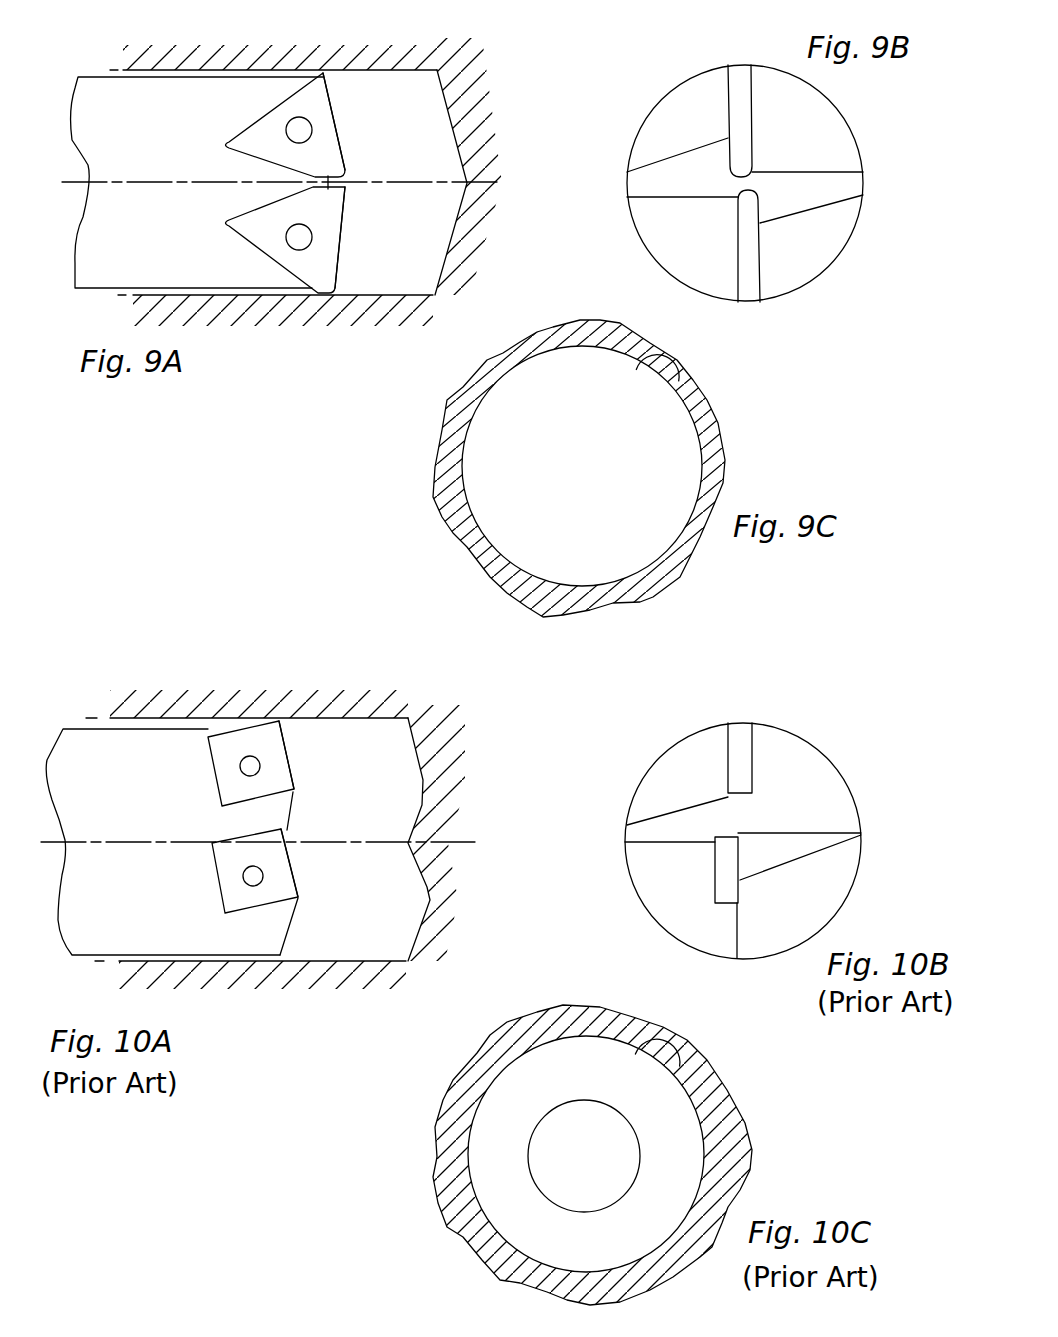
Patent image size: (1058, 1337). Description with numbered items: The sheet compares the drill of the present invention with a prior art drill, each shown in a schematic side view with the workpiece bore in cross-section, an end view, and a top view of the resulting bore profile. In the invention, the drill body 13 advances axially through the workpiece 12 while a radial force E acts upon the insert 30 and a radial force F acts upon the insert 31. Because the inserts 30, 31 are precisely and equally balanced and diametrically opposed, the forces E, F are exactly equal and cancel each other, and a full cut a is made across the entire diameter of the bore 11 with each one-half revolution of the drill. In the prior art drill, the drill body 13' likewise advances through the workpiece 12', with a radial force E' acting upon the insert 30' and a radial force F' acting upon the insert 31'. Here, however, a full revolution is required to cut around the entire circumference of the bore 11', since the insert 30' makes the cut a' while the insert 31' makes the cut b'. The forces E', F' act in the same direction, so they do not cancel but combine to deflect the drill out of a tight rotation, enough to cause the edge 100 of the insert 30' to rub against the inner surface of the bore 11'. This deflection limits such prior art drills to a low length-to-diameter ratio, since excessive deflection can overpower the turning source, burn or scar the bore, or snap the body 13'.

In FIG. 9A, the bore 11 is at (476, 182).
In FIG. 9C, the bore 11 is at (594, 468).
In FIG. 9A, the workpiece 12 is at (306, 171).
In FIG. 9A, the drill body 13 is at (199, 145).
In FIG. 9B, the drill body 13 is at (772, 163).
In FIG. 9A, the insert 30 is at (286, 90).
In FIG. 9B, the insert 30 is at (697, 102).
In FIG. 9A, the insert 31 is at (286, 282).
In FIG. 9B, the insert 31 is at (798, 258).
In FIG. 9A, the radial force E is at (372, 121).
In FIG. 9A, the radial force F is at (379, 237).
In FIG. 9C, the full cut a is at (705, 430).
In FIG. 10A, the edge 100 is at (290, 718).
In FIG. 10A, the bore 11' is at (431, 850).
In FIG. 10C, the bore 11' is at (592, 1147).
In FIG. 10A, the workpiece 12' is at (294, 839).
In FIG. 10A, the drill body 13' is at (172, 801).
In FIG. 10B, the drill body 13' is at (769, 802).
In FIG. 10A, the insert 30' is at (291, 763).
In FIG. 10B, the insert 30' is at (781, 732).
In FIG. 10A, the insert 31' is at (286, 886).
In FIG. 10B, the insert 31' is at (673, 898).
In FIG. 10A, the radial force E' is at (329, 755).
In FIG. 10A, the radial force F' is at (334, 863).
In FIG. 10C, the cut a' is at (718, 1090).
In FIG. 10C, the cut b' is at (601, 1156).